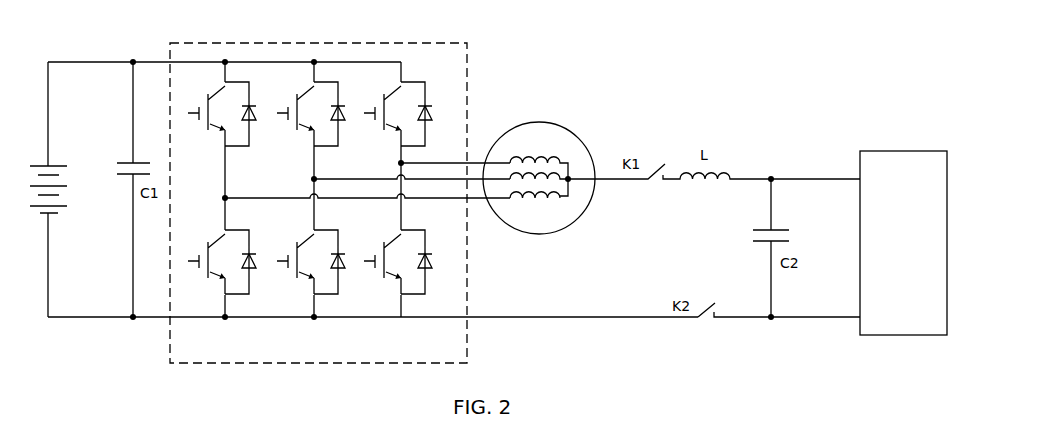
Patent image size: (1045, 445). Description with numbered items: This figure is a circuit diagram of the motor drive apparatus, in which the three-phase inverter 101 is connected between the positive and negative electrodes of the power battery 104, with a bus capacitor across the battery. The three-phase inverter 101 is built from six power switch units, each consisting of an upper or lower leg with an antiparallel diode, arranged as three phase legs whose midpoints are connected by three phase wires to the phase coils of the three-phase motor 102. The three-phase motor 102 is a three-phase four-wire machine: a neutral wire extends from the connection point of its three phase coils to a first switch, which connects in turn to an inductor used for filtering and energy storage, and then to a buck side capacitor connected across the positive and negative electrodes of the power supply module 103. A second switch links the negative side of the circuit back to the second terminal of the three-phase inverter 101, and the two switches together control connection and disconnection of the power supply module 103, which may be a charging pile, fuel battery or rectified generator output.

The three-phase inverter 101 is at (318, 43).
The three-phase motor 102 is at (533, 124).
The power supply module 103 is at (880, 151).
The power battery 104 is at (53, 163).